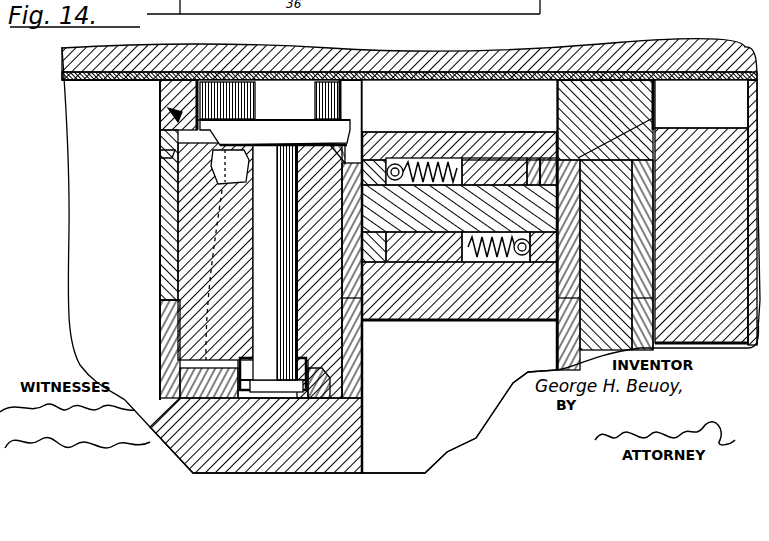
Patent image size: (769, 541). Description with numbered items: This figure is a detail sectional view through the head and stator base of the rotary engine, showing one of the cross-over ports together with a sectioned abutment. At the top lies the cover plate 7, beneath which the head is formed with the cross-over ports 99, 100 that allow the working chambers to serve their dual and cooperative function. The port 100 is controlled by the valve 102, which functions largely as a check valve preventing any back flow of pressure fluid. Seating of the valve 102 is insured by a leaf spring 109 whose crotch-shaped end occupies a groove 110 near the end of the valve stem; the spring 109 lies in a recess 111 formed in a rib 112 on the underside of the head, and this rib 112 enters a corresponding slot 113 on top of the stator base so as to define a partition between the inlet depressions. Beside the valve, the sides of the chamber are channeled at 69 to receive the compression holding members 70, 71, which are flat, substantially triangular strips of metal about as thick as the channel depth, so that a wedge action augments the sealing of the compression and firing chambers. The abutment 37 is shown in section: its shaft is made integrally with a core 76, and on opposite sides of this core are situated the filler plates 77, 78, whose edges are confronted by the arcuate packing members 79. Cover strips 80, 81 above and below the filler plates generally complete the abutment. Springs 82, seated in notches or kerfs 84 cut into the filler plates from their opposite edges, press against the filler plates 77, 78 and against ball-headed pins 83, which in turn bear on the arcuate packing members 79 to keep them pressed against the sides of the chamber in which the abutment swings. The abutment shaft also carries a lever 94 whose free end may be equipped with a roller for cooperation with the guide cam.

The cover plate 7 is at (655, 60).
The abutment 37 is at (524, 128).
The channel 69 is at (163, 153).
The compression holding member 70 is at (166, 186).
The compression holding member 71 is at (165, 322).
The core 76 is at (459, 208).
The filler plate 77 is at (493, 172).
The filler plate 78 is at (424, 262).
The arcuate packing member 79 is at (372, 168).
The cover strip 80 is at (432, 145).
The cover strip 81 is at (403, 322).
The spring 82 is at (455, 172).
The ball-headed pin 83 is at (398, 170).
The notch or kerf 84 is at (478, 162).
The lever 94 is at (700, 239).
The cross-over port 99 is at (170, 110).
The cross-over port 100 is at (338, 92).
The valve 102 is at (213, 128).
The leaf spring 109 is at (158, 372).
The groove 110 is at (272, 383).
The recess 111 is at (200, 353).
The rib 112 is at (330, 397).
The slot 113 is at (313, 402).